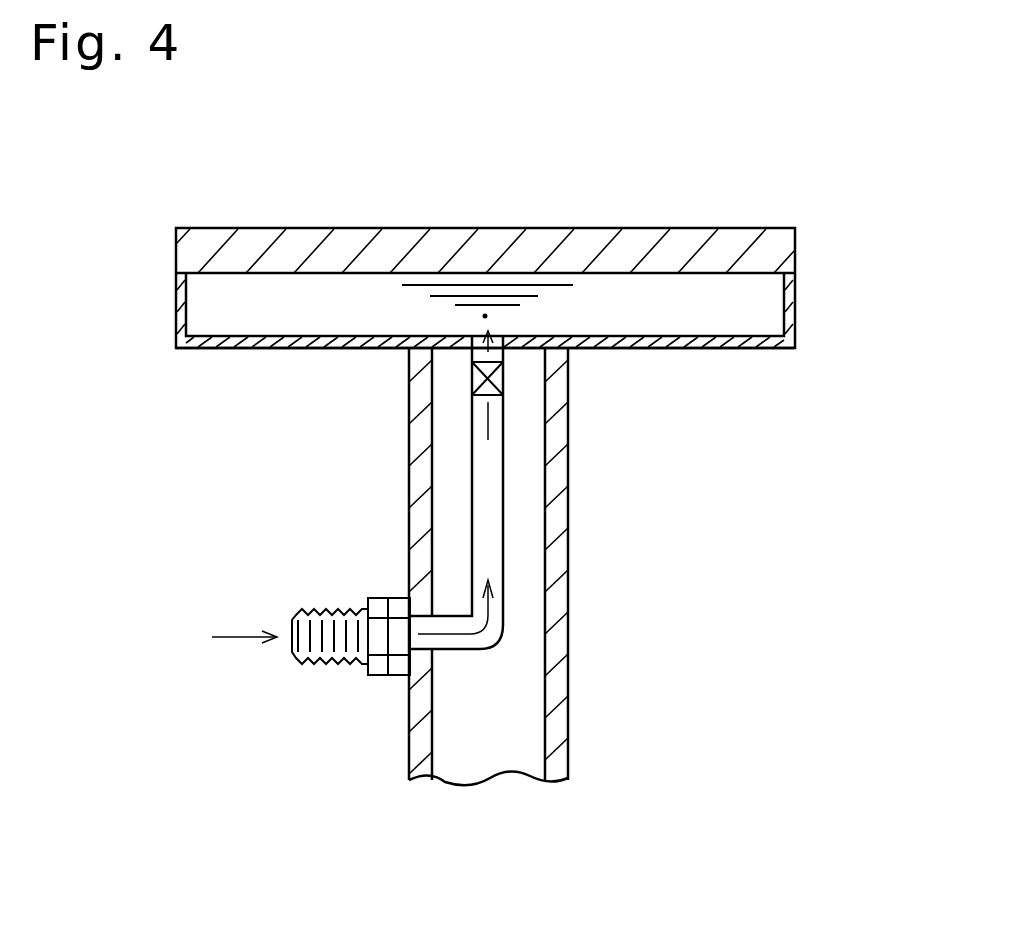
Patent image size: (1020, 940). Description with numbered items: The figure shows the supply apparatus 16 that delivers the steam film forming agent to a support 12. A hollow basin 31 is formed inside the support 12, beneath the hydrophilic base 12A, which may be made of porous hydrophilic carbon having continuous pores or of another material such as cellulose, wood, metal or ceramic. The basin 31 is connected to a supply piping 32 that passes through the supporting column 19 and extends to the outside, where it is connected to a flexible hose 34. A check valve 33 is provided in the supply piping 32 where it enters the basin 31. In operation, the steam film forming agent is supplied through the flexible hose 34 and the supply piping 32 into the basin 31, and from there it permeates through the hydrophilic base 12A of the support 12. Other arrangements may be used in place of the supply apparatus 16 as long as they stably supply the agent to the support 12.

The support 12 is at (803, 301).
The base 12A is at (504, 245).
The hollow basin 31 is at (690, 297).
The supply piping 32 is at (488, 505).
The check valve 33 is at (505, 374).
The flexible hose 34 is at (327, 607).
The supply apparatus 16 is at (532, 560).
The supporting column 19 is at (570, 590).